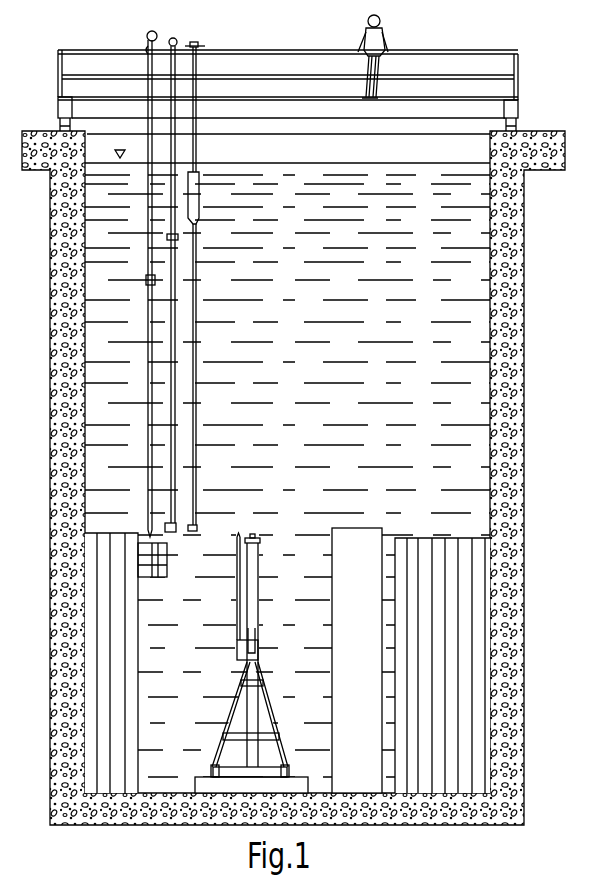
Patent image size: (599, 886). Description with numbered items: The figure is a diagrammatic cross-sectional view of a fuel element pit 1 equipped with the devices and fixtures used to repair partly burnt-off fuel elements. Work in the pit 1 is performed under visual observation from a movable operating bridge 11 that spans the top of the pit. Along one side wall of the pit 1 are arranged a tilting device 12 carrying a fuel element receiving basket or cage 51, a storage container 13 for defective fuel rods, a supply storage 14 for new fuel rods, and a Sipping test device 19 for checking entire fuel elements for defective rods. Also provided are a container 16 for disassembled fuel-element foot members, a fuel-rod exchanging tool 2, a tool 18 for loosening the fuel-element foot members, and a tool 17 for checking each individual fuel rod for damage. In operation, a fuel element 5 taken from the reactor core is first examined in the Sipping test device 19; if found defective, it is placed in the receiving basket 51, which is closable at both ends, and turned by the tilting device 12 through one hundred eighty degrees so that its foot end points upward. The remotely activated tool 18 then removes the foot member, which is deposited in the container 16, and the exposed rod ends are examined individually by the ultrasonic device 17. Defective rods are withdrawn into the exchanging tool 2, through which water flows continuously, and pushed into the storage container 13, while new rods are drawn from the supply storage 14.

The fuel element pit 1 is at (97, 432).
The fuel-rod exchanging tool 2 is at (147, 292).
The fuel element 5 is at (252, 537).
The movable operating bridge 11 is at (107, 97).
The tilting device 12 is at (243, 651).
The storage container for defective fuel rods 13 is at (88, 723).
The supply storage for new fuel rods 14 is at (482, 705).
The container for disassembled fuel-element foot members 16 is at (155, 560).
The tool for checking individual fuel rods 17 is at (193, 398).
The tool for loosening fuel-element foot members 18 is at (172, 333).
The Sipping test device 19 is at (340, 720).
The fuel element receiving basket 51 is at (253, 578).